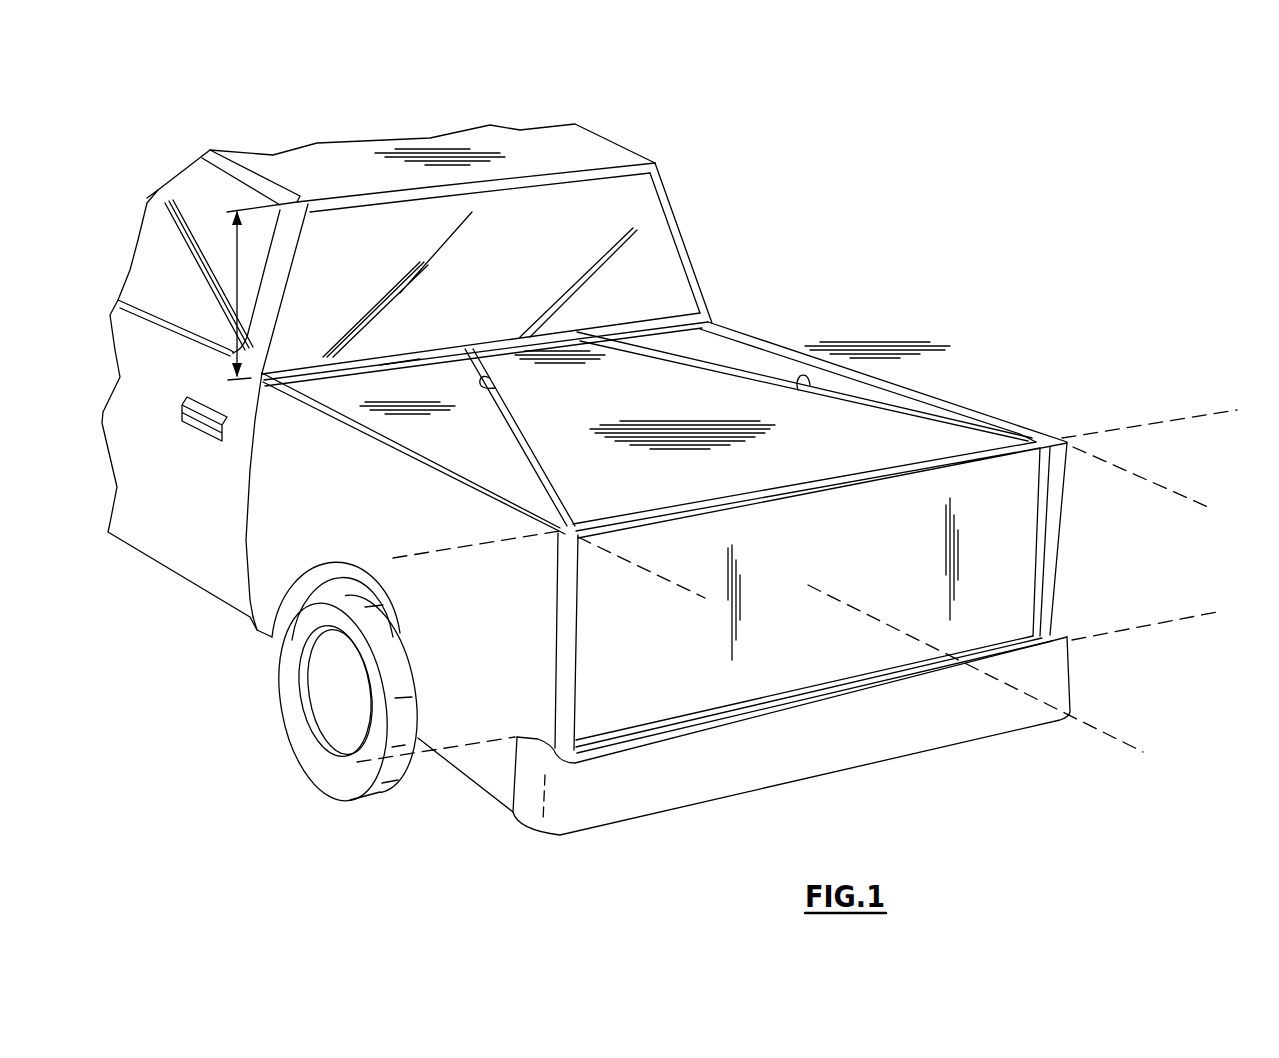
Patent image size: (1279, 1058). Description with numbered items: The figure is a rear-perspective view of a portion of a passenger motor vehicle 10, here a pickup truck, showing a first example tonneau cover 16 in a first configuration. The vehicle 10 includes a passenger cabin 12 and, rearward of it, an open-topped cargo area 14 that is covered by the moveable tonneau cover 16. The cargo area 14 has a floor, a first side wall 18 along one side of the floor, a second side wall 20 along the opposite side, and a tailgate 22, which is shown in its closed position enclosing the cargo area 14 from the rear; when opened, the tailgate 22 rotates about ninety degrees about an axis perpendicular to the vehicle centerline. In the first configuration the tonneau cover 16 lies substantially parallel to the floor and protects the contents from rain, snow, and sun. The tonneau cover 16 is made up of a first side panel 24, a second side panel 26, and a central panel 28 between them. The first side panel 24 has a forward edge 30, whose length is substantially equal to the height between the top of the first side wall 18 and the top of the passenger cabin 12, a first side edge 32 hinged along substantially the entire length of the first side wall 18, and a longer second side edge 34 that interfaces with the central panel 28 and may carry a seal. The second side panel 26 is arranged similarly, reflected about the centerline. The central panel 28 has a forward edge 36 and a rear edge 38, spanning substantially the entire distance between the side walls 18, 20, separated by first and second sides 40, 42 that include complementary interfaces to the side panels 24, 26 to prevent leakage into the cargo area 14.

The passenger motor vehicle 10 is at (890, 169).
The passenger cabin 12 is at (612, 130).
The cargo area 14 is at (935, 345).
The tonneau cover 16 is at (790, 325).
The first side wall 18 is at (325, 500).
The second side wall 20 is at (985, 411).
The tailgate 22 is at (815, 652).
The first side panel 24 is at (398, 368).
The second side panel 26 is at (682, 335).
The central panel 28 is at (563, 385).
The forward edge 30 is at (357, 357).
The first side edge 32 is at (333, 415).
The second side edge 34 is at (500, 437).
The forward edge 36 is at (508, 350).
The rear edge 38 is at (828, 483).
The first side 40 is at (495, 388).
The second side 42 is at (810, 385).